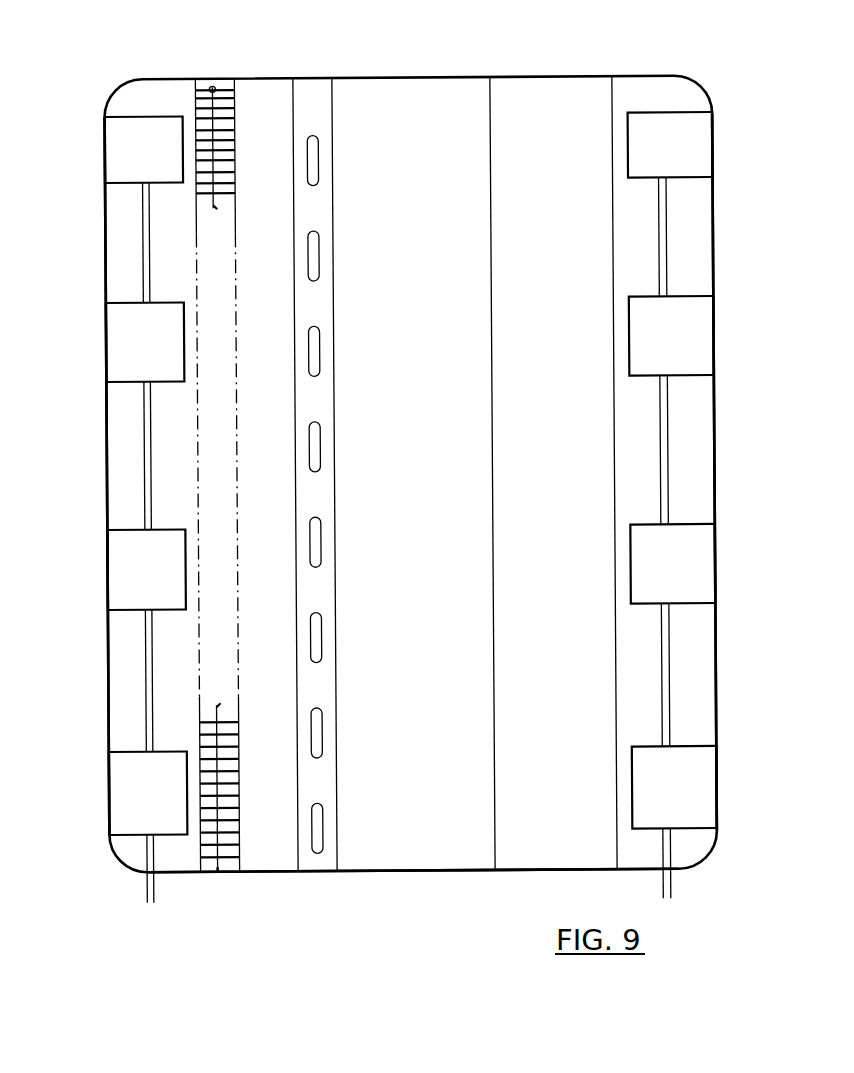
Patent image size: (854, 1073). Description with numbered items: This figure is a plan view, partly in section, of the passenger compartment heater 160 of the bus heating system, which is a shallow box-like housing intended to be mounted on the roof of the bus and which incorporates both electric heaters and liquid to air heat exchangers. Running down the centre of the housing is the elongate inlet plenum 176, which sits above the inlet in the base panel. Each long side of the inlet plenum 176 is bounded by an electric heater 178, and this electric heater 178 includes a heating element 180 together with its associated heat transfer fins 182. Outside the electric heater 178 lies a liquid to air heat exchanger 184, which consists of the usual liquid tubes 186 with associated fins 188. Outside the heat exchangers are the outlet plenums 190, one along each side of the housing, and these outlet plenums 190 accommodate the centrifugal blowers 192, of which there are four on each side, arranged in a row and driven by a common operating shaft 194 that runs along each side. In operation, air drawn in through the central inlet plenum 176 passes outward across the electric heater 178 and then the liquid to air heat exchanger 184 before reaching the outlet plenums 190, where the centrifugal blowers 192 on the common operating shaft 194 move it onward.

The passenger compartment heater 160 is at (736, 590).
The inlet plenum 176 is at (413, 850).
The electric heater 178 is at (320, 90).
The heating element 180 is at (318, 163).
The heat transfer fins 182 is at (322, 210).
The liquid to air heat exchanger 184 is at (222, 85).
The liquid tubes 186 is at (213, 88).
The fins 188 is at (228, 105).
The outlet plenum 190 is at (120, 254).
The centrifugal blower 192 is at (120, 350).
The common operating shaft 194 is at (143, 458).